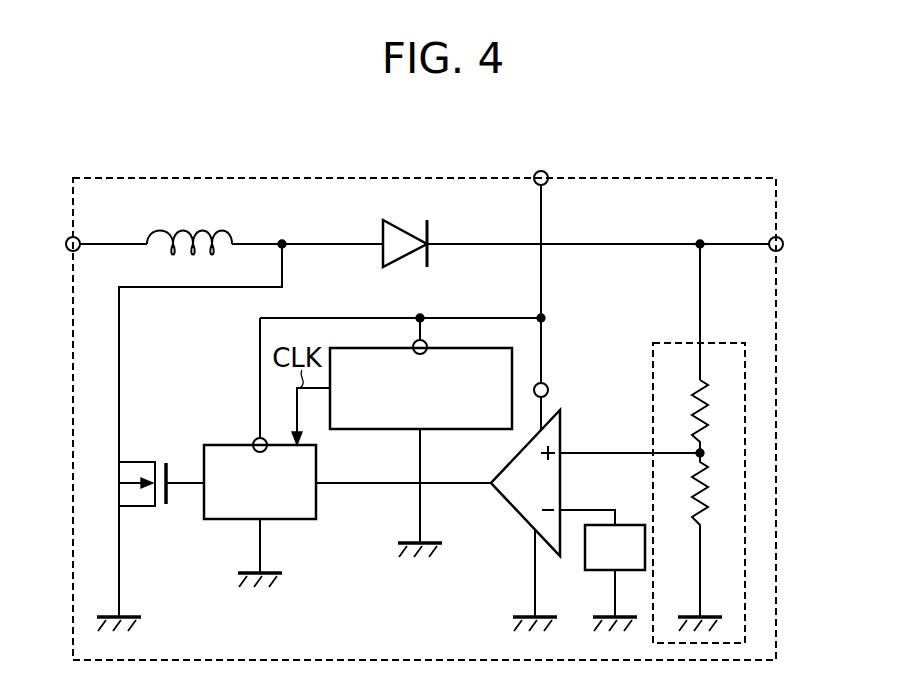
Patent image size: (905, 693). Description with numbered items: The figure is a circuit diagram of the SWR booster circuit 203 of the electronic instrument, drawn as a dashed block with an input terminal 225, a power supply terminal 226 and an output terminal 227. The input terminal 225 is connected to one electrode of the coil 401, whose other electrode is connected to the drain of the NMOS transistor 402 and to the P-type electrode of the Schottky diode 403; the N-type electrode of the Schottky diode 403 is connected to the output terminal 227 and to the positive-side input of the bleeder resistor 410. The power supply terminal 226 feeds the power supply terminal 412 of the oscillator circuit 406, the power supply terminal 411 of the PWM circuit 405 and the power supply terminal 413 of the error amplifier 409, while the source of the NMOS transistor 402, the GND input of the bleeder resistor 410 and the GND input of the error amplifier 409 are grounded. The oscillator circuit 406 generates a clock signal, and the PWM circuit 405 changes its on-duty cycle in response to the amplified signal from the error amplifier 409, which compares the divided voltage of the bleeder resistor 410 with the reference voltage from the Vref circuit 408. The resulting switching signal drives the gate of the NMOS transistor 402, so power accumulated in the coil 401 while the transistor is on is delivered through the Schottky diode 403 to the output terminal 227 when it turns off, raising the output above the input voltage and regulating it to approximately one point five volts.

The SWR booster circuit 203 is at (343, 178).
The input terminal 225 is at (67, 250).
The power supply terminal 226 is at (541, 171).
The output terminal 227 is at (783, 249).
The coil 401 is at (236, 238).
The NMOS transistor 402 is at (142, 507).
The Schottky diode 403 is at (430, 224).
The PWM circuit 405 is at (305, 520).
The oscillator circuit 406 is at (368, 347).
The Vref circuit 408 is at (585, 557).
The error amplifier 409 is at (562, 432).
The bleeder resistor 410 is at (674, 343).
The power supply terminal of the PWM circuit 411 is at (253, 444).
The power supply terminal of the oscillator circuit 412 is at (428, 345).
The power supply terminal of the error amplifier 413 is at (549, 388).